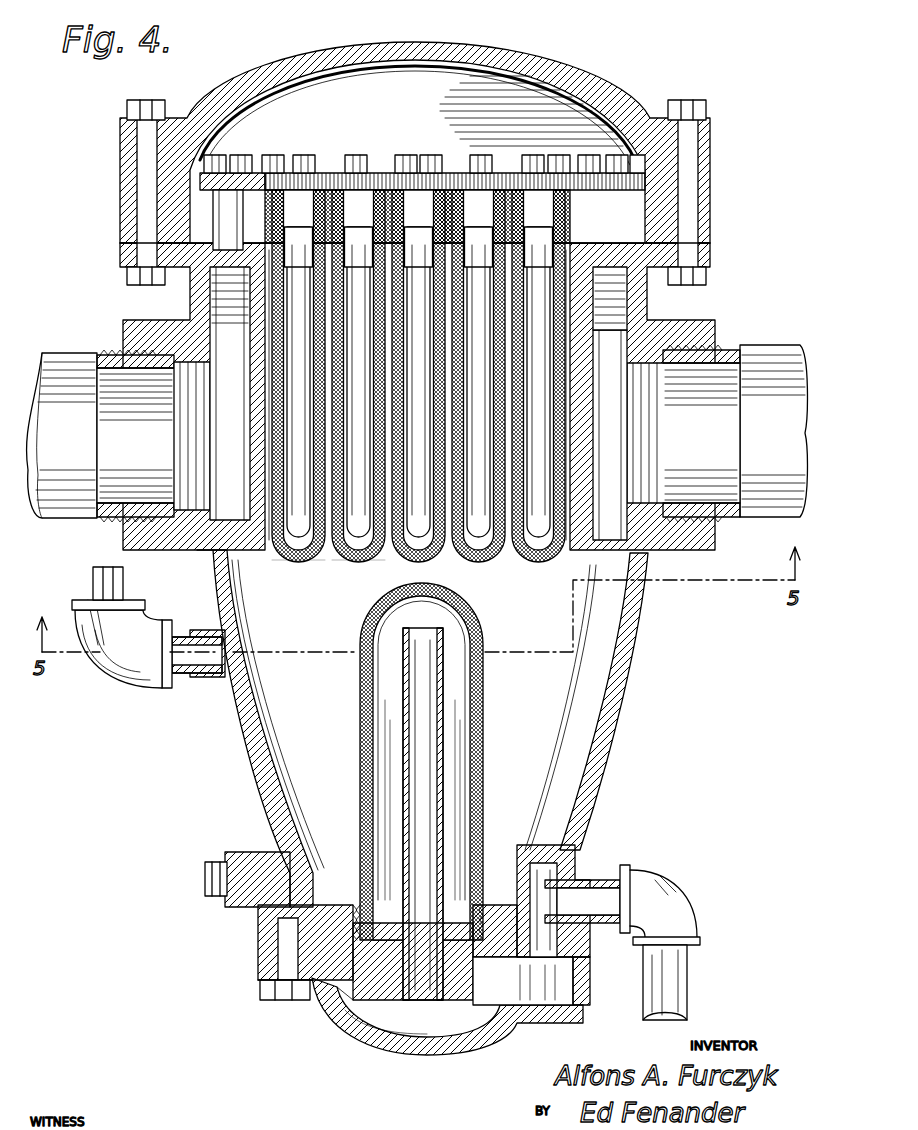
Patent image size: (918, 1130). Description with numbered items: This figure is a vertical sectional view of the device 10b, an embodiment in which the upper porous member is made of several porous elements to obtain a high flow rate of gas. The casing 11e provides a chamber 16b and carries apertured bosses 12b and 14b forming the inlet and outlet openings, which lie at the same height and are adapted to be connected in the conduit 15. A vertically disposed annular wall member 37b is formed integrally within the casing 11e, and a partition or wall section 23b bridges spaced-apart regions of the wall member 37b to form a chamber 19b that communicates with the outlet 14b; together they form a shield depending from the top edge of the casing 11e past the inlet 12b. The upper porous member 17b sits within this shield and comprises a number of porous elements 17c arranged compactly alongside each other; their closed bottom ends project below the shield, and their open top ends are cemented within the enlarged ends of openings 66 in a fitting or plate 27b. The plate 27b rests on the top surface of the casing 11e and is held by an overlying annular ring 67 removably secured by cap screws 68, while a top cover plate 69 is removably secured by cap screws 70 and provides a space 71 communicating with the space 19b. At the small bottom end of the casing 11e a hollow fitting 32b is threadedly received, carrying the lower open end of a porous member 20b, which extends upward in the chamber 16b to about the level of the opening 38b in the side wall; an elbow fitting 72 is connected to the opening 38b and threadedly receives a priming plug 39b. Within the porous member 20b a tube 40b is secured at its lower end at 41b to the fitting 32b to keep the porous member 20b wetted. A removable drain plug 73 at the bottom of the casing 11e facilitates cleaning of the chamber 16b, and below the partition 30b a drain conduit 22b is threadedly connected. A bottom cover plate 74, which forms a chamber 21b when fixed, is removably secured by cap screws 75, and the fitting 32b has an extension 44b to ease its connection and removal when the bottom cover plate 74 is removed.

The device 10b is at (616, 89).
The casing 11e is at (620, 650).
The apertured boss (inlet opening) 12b is at (717, 545).
The apertured boss (outlet opening) 14b is at (127, 334).
The conduit 15 is at (62, 356).
The chamber 16b is at (550, 699).
The upper porous member 17b is at (495, 582).
The porous elements 17c is at (360, 563).
The chamber (space) 19b is at (230, 428).
The porous member 20b is at (484, 742).
The chamber 21b is at (392, 1020).
The drain conduit 22b is at (688, 972).
The partition or wall section 23b is at (258, 490).
The fitting or plate 27b is at (390, 178).
The partition 30b is at (530, 848).
The hollow fitting 32b is at (340, 900).
The wall member 37b is at (603, 497).
The opening 38b is at (220, 655).
The priming plug 39b is at (92, 597).
The tube 40b is at (403, 733).
The lower end securement of tube 41b is at (337, 1003).
The extension 44b is at (478, 960).
The openings 66 is at (420, 205).
The annular ring 67 is at (245, 185).
The cap screws 68 is at (417, 157).
The top cover plate 69 is at (557, 66).
The cap screws 70 is at (135, 104).
The space 71 is at (424, 131).
The elbow fitting 72 is at (130, 682).
The drain plug 73 is at (233, 852).
The bottom cover plate 74 is at (375, 1045).
The cap screws 75 is at (262, 1000).